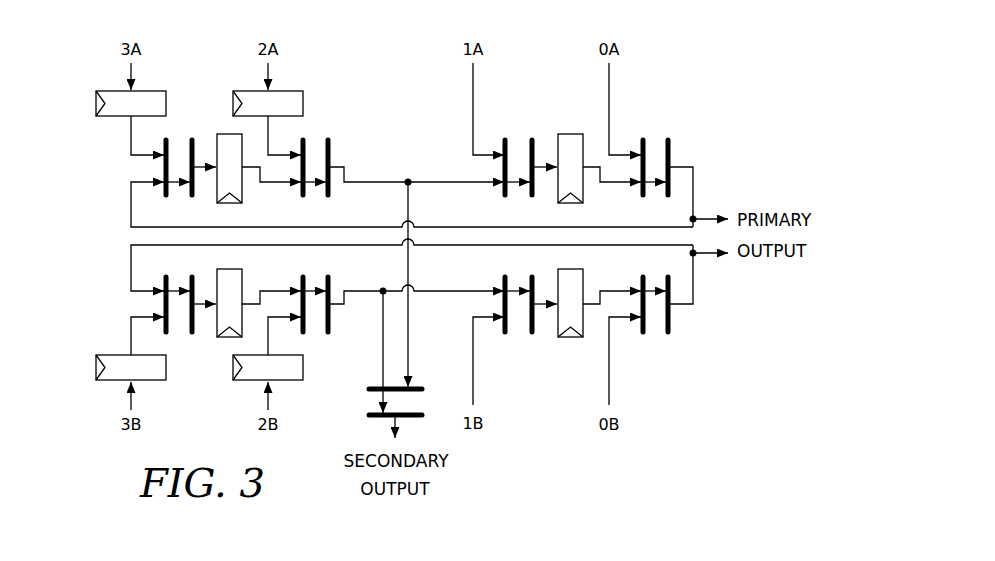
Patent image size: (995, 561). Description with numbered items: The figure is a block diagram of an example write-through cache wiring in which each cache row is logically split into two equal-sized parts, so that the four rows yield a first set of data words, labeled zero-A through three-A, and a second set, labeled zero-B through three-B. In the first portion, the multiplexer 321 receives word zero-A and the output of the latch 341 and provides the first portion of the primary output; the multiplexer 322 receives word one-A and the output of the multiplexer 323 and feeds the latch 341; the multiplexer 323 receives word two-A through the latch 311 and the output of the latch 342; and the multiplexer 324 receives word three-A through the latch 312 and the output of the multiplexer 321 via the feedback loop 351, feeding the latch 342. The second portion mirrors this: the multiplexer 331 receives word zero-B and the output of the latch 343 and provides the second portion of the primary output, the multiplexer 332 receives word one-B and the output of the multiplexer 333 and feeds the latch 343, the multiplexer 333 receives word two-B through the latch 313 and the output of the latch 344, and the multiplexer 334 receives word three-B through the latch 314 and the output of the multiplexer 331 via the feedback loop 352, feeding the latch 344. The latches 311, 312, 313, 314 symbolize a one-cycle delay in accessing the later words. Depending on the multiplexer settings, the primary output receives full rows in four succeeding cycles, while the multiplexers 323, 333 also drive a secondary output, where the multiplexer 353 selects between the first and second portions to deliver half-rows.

The latch 311 is at (293, 90).
The latch 312 is at (156, 90).
The latch 313 is at (293, 381).
The latch 314 is at (156, 381).
The multiplexer 321 is at (652, 136).
The multiplexer 322 is at (515, 136).
The multiplexer 323 is at (316, 136).
The multiplexer 324 is at (180, 136).
The multiplexer 331 is at (652, 336).
The multiplexer 332 is at (517, 336).
The multiplexer 333 is at (316, 336).
The multiplexer 334 is at (180, 336).
The latch 341 is at (573, 203).
The latch 342 is at (232, 203).
The latch 343 is at (573, 268).
The latch 344 is at (232, 268).
The feedback loop 351 is at (130, 200).
The feedback loop 352 is at (130, 262).
The multiplexer 353 is at (426, 381).